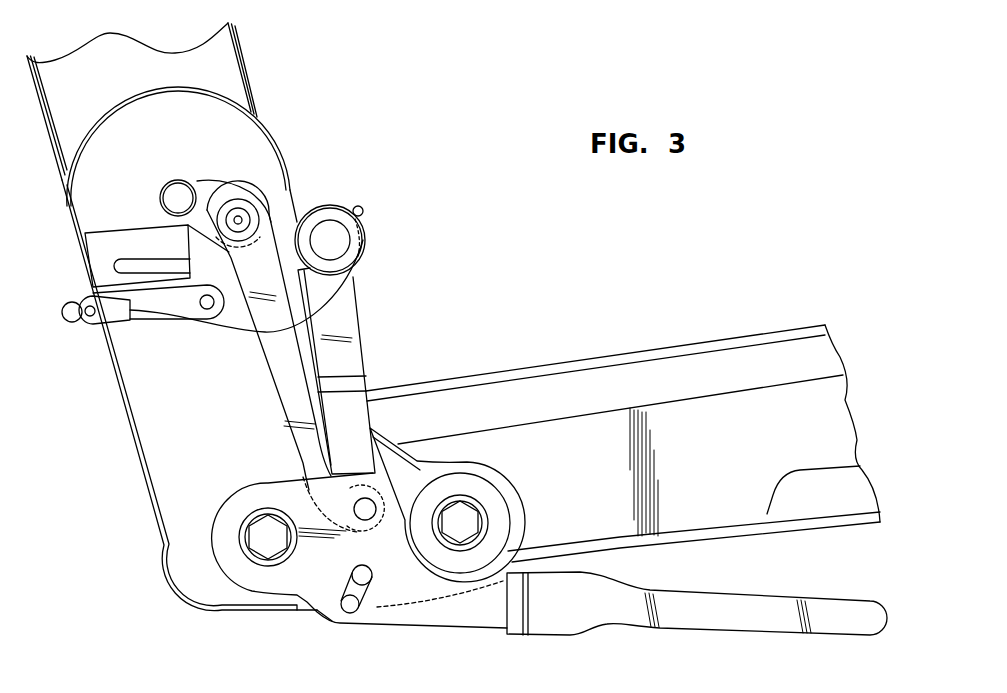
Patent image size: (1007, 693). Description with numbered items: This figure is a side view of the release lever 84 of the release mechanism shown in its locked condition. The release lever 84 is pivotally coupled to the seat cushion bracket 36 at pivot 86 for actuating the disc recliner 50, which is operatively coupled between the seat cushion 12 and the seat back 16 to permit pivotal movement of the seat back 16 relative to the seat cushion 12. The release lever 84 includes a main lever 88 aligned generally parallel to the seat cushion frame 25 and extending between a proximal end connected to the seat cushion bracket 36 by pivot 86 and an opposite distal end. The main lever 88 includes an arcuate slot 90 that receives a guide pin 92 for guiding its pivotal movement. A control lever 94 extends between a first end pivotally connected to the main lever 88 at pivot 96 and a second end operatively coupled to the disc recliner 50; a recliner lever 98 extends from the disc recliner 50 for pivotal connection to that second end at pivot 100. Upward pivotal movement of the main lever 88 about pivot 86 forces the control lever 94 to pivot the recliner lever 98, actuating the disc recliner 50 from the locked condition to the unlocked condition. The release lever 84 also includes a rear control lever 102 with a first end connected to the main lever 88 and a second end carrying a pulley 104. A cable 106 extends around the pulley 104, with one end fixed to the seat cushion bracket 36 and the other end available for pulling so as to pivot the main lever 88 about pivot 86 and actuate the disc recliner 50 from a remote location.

The seat cushion 12 is at (657, 350).
The seat back 16 is at (220, 60).
The seat cushion frame 25 is at (840, 418).
The seat cushion bracket 36 is at (141, 465).
The disc recliner 50 is at (180, 190).
The release lever 84 is at (238, 589).
The pivot 86 is at (257, 539).
The main lever 88 is at (555, 617).
The arcuate slot 90 is at (340, 600).
The guide pin 92 is at (372, 572).
The control lever 94 is at (280, 387).
The pivot 96 is at (368, 510).
The recliner lever 98 is at (201, 178).
The pivot 100 is at (246, 217).
The rear control lever 102 is at (353, 362).
The pulley 104 is at (328, 206).
The cable 106 is at (348, 288).